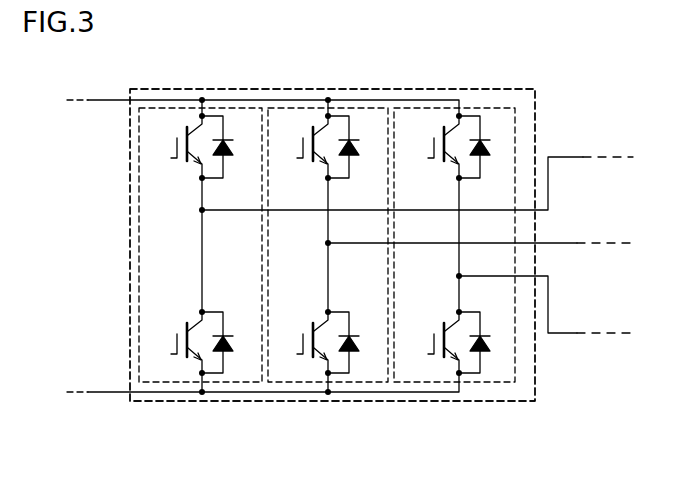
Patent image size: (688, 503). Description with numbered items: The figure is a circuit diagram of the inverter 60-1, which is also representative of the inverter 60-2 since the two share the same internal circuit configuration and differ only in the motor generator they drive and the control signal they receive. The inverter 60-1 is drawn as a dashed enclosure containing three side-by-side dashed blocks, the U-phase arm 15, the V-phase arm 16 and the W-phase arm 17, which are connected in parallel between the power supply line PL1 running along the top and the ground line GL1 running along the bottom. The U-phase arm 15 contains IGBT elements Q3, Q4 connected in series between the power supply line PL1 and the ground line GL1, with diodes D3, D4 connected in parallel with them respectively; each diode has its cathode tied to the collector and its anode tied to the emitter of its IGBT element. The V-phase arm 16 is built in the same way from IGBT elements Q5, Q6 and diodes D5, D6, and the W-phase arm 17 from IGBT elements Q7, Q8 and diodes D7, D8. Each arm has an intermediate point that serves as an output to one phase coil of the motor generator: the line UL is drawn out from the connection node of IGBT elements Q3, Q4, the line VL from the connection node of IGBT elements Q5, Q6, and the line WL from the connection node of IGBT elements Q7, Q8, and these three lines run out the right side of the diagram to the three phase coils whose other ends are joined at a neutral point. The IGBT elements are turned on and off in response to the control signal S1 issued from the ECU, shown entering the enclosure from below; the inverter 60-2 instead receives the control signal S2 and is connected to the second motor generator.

The U-phase arm 15 is at (237, 107).
The V-phase arm 16 is at (362, 108).
The W-phase arm 17 is at (491, 108).
The inverter 60-1 is at (535, 83).
The inverter 60-2 is at (370, 211).
The control signal S1 is at (282, 403).
The control signal S2 is at (332, 278).
The power supply line PL1 is at (106, 98).
The ground line GL1 is at (106, 390).
The line UL is at (572, 156).
The line VL is at (572, 242).
The line WL is at (572, 332).
The IGBT element Q3 is at (173, 147).
The IGBT element Q4 is at (173, 342).
The IGBT element Q5 is at (299, 147).
The IGBT element Q6 is at (300, 342).
The IGBT element Q7 is at (431, 147).
The IGBT element Q8 is at (431, 342).
The diode D3 is at (230, 151).
The diode D4 is at (230, 347).
The diode D5 is at (356, 151).
The diode D6 is at (357, 347).
The diode D7 is at (487, 151).
The diode D8 is at (487, 347).